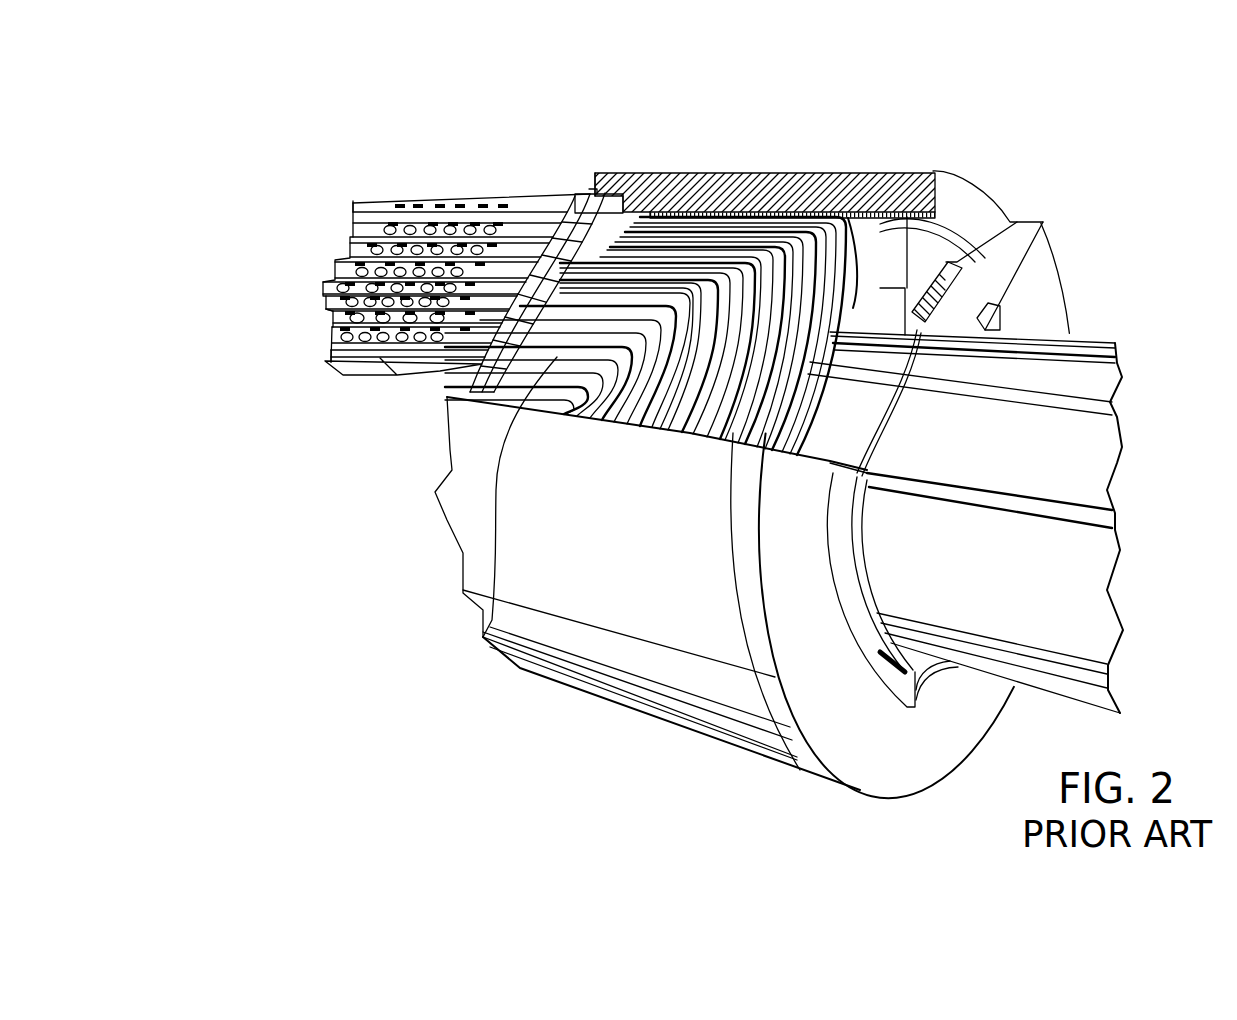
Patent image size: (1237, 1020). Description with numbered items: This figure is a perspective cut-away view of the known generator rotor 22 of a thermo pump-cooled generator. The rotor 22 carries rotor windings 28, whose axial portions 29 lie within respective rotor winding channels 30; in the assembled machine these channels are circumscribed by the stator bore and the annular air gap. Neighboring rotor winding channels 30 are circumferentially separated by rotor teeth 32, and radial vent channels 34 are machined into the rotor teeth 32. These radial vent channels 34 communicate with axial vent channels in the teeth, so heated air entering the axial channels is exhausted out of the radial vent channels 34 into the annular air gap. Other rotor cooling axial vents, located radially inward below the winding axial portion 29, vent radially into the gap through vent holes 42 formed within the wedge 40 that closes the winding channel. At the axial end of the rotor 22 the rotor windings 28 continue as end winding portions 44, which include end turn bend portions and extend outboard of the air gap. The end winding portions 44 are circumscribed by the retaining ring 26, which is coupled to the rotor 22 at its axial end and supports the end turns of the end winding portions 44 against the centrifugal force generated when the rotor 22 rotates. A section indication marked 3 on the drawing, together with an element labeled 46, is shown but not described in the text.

The generator rotor 22 is at (382, 650).
The retaining ring 26 is at (655, 652).
The rotor windings 28 is at (523, 196).
The axial portions 29 is at (526, 223).
The rotor winding channels 30 is at (533, 223).
The rotor teeth 32 is at (427, 258).
The radial vent channels 34 is at (330, 355).
The wedge 40 is at (332, 311).
The vent holes 42 is at (345, 212).
The end winding portions 44 is at (678, 297).
The end plate 46 is at (803, 397).
The section line 3- 3 is at (332, 327).